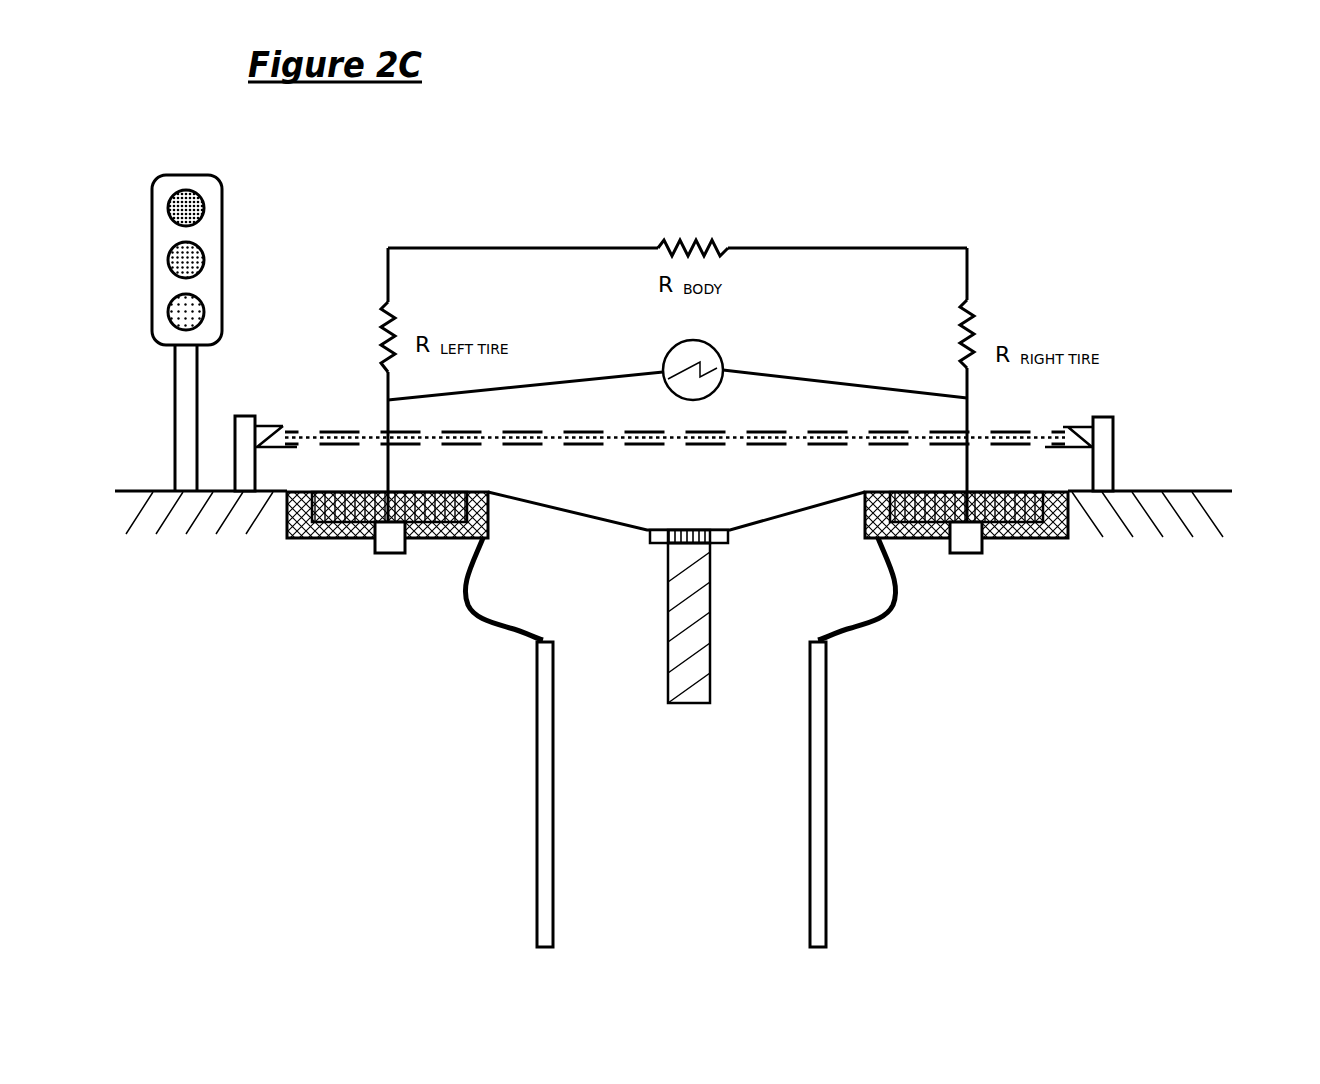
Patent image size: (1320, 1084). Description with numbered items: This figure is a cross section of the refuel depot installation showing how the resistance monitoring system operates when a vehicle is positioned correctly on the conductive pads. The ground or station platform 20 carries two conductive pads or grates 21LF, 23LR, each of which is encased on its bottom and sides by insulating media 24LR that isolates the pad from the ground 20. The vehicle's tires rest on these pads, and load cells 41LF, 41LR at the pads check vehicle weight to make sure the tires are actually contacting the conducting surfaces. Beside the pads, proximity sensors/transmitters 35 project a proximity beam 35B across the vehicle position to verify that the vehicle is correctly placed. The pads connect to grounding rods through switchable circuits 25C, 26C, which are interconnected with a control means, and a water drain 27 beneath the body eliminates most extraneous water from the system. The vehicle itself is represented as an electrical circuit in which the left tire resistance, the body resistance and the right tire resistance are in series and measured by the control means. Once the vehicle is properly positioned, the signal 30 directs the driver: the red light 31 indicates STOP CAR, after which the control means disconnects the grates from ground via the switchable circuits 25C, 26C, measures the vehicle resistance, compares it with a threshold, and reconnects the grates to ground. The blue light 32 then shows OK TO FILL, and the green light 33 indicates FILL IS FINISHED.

The ground or station platform 20 is at (1222, 492).
The signal 30 is at (173, 425).
The red light 31 is at (222, 208).
The blue light 32 is at (222, 260).
The green light 33 is at (222, 312).
The proximity sensor 35 is at (245, 437).
The proximity beam 35B is at (675, 438).
The conductive pad 21LF is at (348, 538).
The load cell 41LF is at (388, 538).
The conductive pad 23LR is at (1023, 538).
The load cell 41LR is at (967, 538).
The insulating media 24LR is at (489, 517).
The water drain 27 is at (712, 627).
The switchable circuit 25C is at (488, 620).
The switchable circuit 26C is at (875, 615).